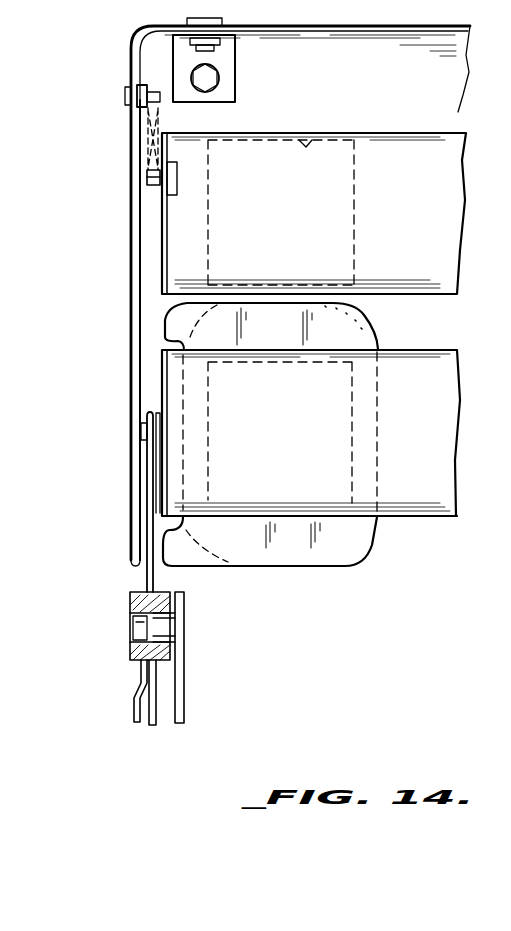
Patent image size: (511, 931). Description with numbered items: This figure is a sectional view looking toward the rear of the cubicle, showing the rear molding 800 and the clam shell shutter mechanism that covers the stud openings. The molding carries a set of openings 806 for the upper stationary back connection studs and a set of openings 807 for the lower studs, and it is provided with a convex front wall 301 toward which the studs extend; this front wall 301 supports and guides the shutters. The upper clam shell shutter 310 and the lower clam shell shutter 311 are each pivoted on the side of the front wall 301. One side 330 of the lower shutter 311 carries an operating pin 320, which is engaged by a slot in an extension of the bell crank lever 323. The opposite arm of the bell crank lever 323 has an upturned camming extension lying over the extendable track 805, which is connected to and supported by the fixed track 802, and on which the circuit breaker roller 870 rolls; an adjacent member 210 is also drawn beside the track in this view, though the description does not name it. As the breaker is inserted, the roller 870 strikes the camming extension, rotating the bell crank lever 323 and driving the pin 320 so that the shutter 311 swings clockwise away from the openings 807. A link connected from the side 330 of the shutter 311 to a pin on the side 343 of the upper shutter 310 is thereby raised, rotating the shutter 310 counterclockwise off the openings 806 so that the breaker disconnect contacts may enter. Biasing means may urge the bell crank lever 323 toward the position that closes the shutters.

The rear molding 800 is at (360, 76).
The convex front wall 301 is at (127, 171).
The side of the shutter 343 is at (162, 250).
The clam shell shutter 310 is at (314, 191).
The openings 806 is at (306, 137).
The side of the shutter 330 is at (261, 433).
The openings 807 is at (352, 441).
The clam shell shutter 311 is at (392, 516).
The operating pin 320 is at (146, 432).
The bell crank lever 323 is at (147, 538).
The circuit breaker roller 870 is at (135, 655).
The mounting plate 210 is at (187, 680).
The extendable track 805 is at (158, 707).
The fixed track 802 is at (133, 720).